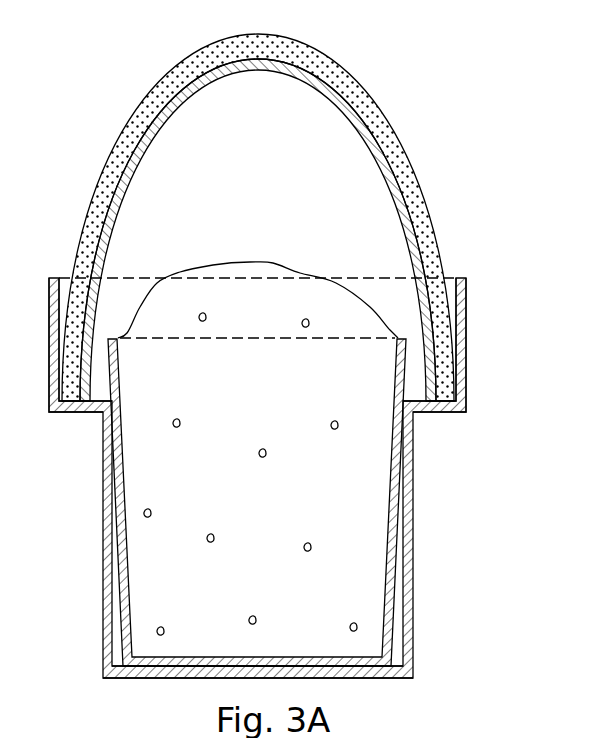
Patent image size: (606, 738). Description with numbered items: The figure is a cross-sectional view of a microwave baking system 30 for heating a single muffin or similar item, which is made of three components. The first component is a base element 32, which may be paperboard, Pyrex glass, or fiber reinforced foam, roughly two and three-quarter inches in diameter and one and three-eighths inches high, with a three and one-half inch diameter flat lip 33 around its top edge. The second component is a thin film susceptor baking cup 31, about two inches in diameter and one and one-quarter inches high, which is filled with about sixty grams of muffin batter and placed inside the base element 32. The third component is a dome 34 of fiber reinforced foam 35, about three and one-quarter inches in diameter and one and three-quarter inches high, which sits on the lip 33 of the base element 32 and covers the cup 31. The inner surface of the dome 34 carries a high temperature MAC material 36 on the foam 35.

The baking system 30 is at (321, 484).
The baking cup 31 is at (390, 578).
The base element 32 is at (410, 657).
The lip 33 is at (430, 412).
The dome 34 is at (255, 200).
The fiber reinforced foam 35 is at (175, 88).
The high temperature MAC material 36 is at (353, 112).